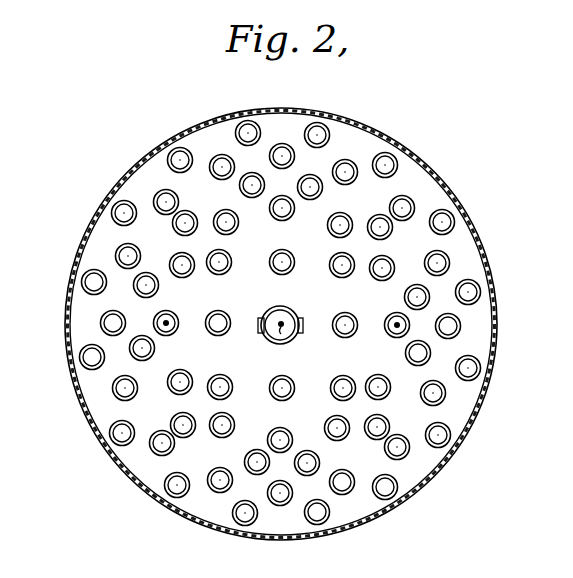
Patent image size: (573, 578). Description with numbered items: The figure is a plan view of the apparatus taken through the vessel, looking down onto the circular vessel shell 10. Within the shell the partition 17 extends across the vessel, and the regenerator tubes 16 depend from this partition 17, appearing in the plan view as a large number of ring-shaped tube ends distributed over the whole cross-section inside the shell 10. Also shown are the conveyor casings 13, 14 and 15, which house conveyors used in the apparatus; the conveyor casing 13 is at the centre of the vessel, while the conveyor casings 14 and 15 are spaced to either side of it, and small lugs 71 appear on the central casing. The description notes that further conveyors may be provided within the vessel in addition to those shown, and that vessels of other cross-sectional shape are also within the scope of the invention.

The vessel shell 10 is at (149, 151).
The conveyor casing 13 is at (290, 308).
The conveyor casing 14 is at (167, 322).
The conveyor casing 15 is at (394, 322).
The regenerator tubes 16 is at (101, 322).
The partition 17 is at (418, 415).
The hub lugs 71 is at (258, 324).